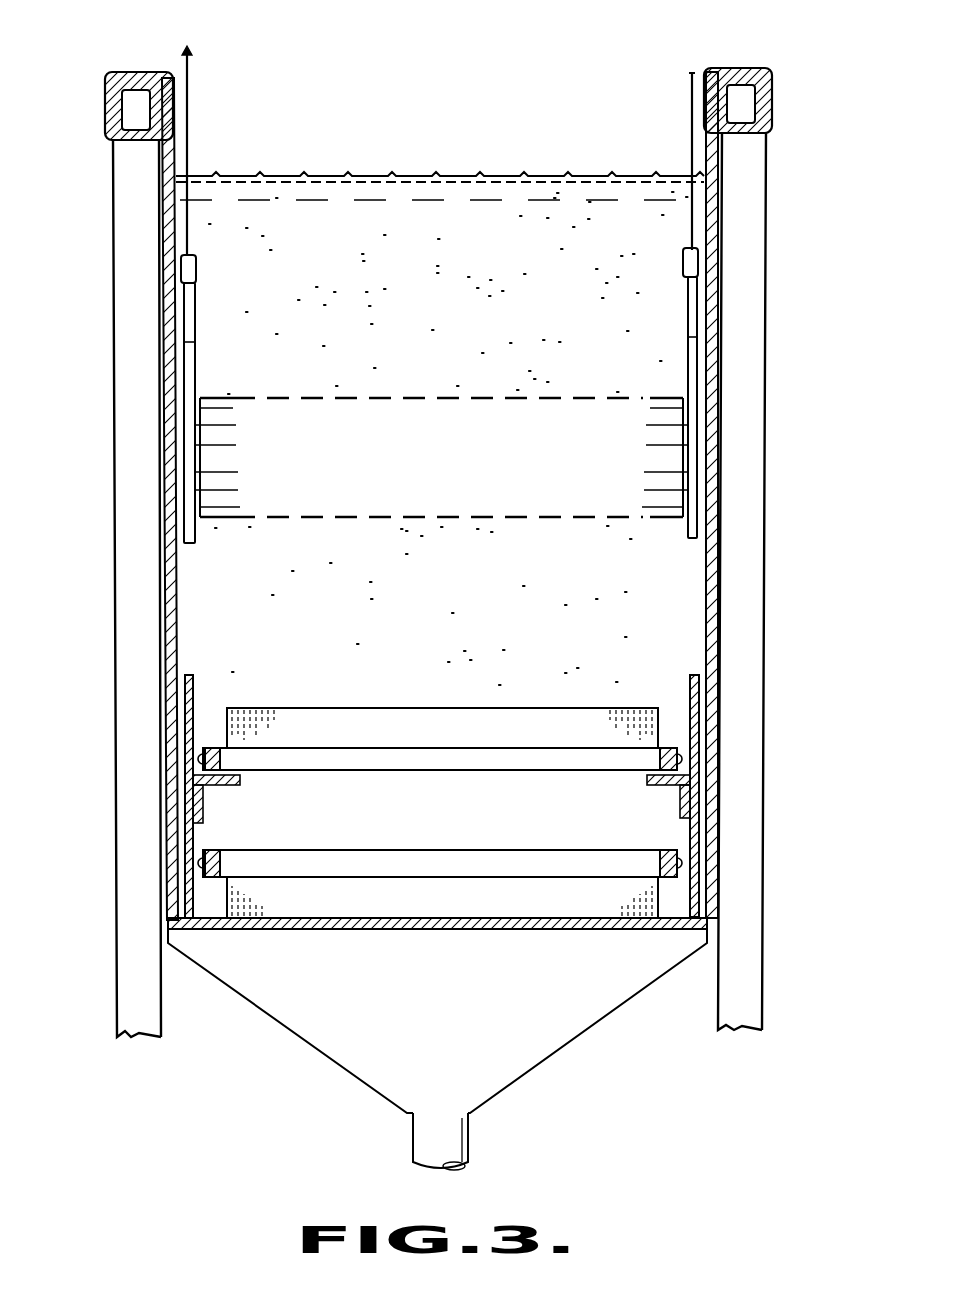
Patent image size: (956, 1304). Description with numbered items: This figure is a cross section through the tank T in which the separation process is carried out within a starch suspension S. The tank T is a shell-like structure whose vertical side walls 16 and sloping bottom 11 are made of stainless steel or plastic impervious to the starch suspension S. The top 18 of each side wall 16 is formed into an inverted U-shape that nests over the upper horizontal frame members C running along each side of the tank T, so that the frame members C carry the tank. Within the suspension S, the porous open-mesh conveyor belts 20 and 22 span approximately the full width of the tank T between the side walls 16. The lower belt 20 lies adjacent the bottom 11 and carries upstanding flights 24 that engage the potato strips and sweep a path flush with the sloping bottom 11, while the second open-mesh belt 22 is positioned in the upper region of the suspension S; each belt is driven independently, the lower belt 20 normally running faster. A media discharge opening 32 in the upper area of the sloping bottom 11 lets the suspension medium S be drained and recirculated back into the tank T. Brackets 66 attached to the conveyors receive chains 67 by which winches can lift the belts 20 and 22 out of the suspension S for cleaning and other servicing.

The sloping bottom 11 is at (557, 928).
The side walls 16 is at (178, 595).
The top of the walls 18 is at (120, 77).
The continuous conveyor belt 20 is at (390, 747).
The second open mesh conveyor belt 22 is at (417, 398).
The flights 24 is at (502, 710).
The media discharge opening 32 is at (535, 1070).
The brackets 66 is at (193, 307).
The chains 67 is at (190, 110).
The horizontal frame members C is at (117, 302).
The tank T is at (170, 555).
The starch suspension S is at (439, 301).